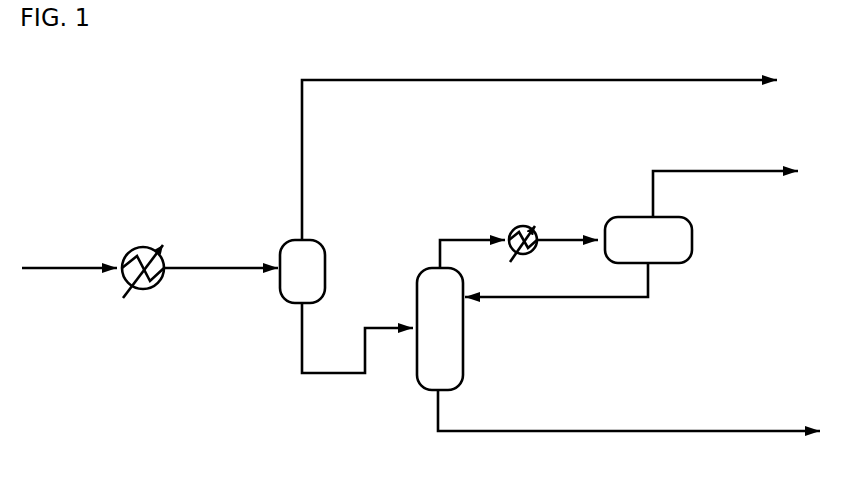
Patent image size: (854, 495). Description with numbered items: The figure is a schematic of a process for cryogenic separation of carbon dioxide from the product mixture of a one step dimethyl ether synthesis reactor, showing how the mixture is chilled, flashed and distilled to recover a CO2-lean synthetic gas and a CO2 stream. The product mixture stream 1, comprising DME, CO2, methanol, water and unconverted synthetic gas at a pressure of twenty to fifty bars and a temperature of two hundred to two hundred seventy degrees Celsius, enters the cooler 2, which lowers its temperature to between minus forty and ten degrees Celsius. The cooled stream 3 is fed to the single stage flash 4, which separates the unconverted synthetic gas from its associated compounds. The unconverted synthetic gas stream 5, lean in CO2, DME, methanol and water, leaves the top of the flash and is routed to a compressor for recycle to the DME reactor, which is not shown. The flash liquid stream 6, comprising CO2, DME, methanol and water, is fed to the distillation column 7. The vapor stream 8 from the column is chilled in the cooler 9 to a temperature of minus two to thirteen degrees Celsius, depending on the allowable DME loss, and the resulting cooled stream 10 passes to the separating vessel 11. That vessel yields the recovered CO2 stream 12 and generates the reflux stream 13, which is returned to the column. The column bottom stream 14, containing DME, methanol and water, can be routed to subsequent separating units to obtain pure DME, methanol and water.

The product mixture stream 1 is at (56, 262).
The cooler 2 is at (143, 280).
The cooled stream 3 is at (204, 262).
The single stage flash 4 is at (328, 274).
The unconverted synthetic gas stream 5 is at (434, 77).
The flash liquid stream 6 is at (345, 379).
The distillation column 7 is at (496, 334).
The vapor stream 8 is at (451, 237).
The cooler 9 is at (523, 255).
The cooled stream 10 is at (556, 246).
The separating vessel 11 is at (728, 213).
The recovered CO2 stream 12 is at (701, 168).
The reflux stream 13 is at (577, 301).
The column bottom stream 14 is at (586, 427).